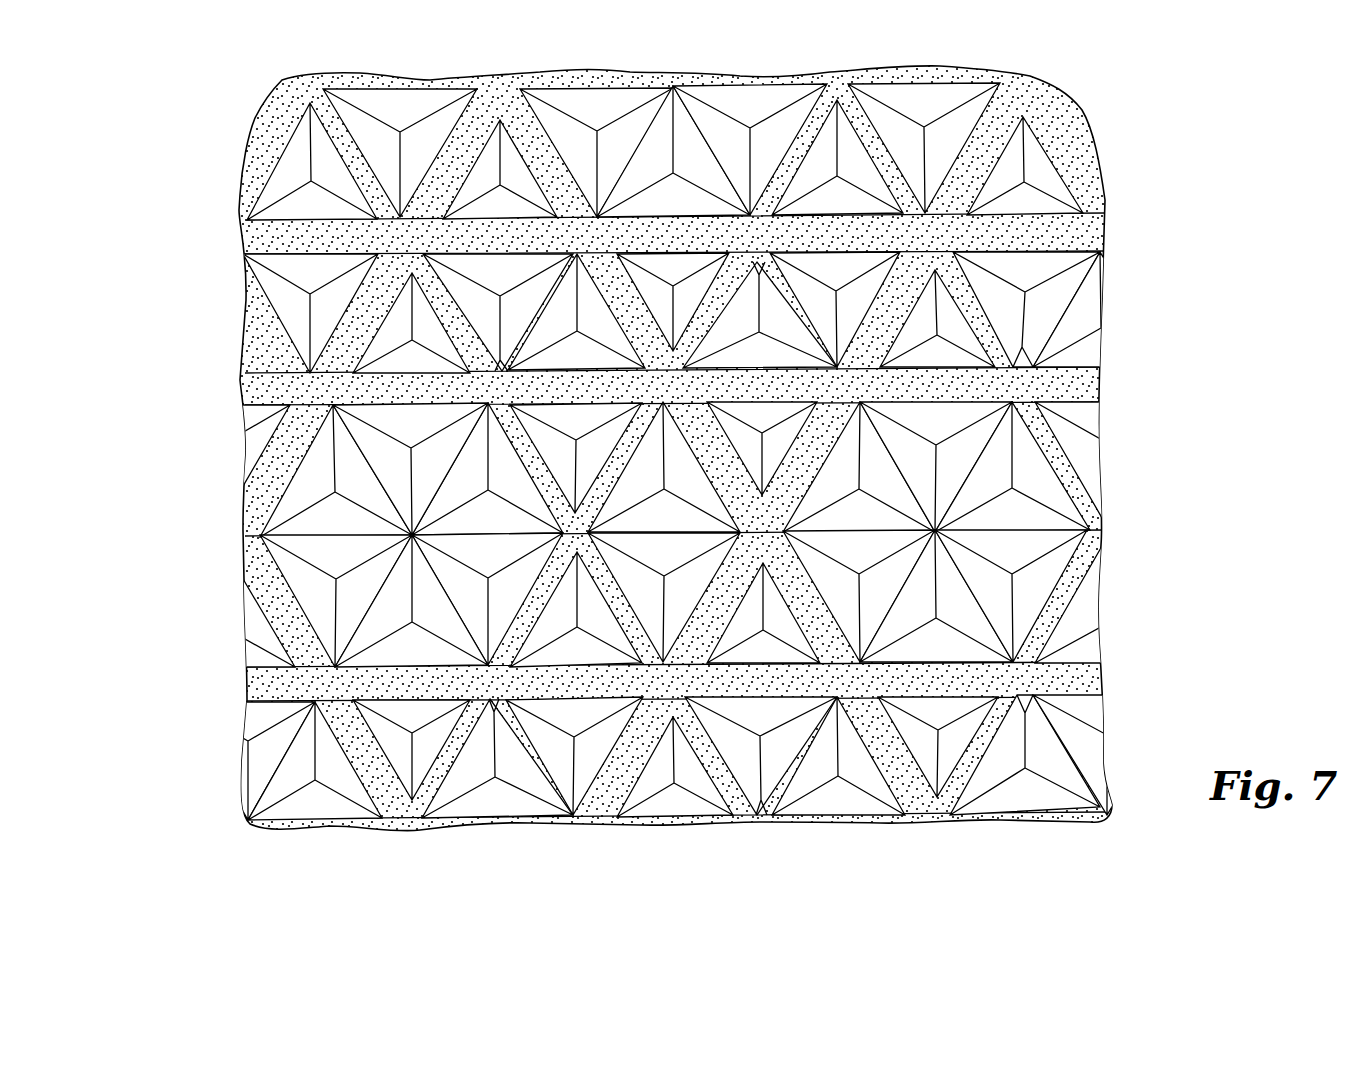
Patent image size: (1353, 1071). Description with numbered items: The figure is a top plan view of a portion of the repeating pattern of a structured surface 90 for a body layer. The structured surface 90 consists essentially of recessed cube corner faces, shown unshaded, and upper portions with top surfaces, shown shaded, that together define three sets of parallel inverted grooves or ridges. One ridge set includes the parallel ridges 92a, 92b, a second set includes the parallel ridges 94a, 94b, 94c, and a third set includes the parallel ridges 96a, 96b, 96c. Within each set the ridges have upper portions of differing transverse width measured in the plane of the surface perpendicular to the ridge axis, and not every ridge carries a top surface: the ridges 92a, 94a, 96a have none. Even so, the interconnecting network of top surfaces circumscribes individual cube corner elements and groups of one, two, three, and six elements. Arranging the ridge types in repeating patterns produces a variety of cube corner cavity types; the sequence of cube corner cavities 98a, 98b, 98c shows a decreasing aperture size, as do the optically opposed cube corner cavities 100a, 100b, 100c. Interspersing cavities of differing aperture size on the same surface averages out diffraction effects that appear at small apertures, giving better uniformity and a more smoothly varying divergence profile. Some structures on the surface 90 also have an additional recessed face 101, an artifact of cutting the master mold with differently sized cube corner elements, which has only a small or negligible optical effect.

The structured surface 90 is at (1095, 76).
The ridge 92a is at (230, 528).
The ridge 92b is at (172, 237).
The ridge 94a is at (712, 30).
The ridge 94b is at (838, 78).
The ridge 94c is at (1040, 30).
The ridge 96a is at (662, 70).
The ridge 96b is at (278, 27).
The ridge 96c is at (532, 23).
The cube corner cavity 98a is at (387, 455).
The cube corner cavity 98b is at (523, 427).
The cube corner cavity 98c is at (793, 430).
The cube corner cavity 100a is at (387, 607).
The cube corner cavity 100b is at (548, 654).
The cube corner cavity 100c is at (767, 650).
The additional recessed face 101 is at (492, 362).